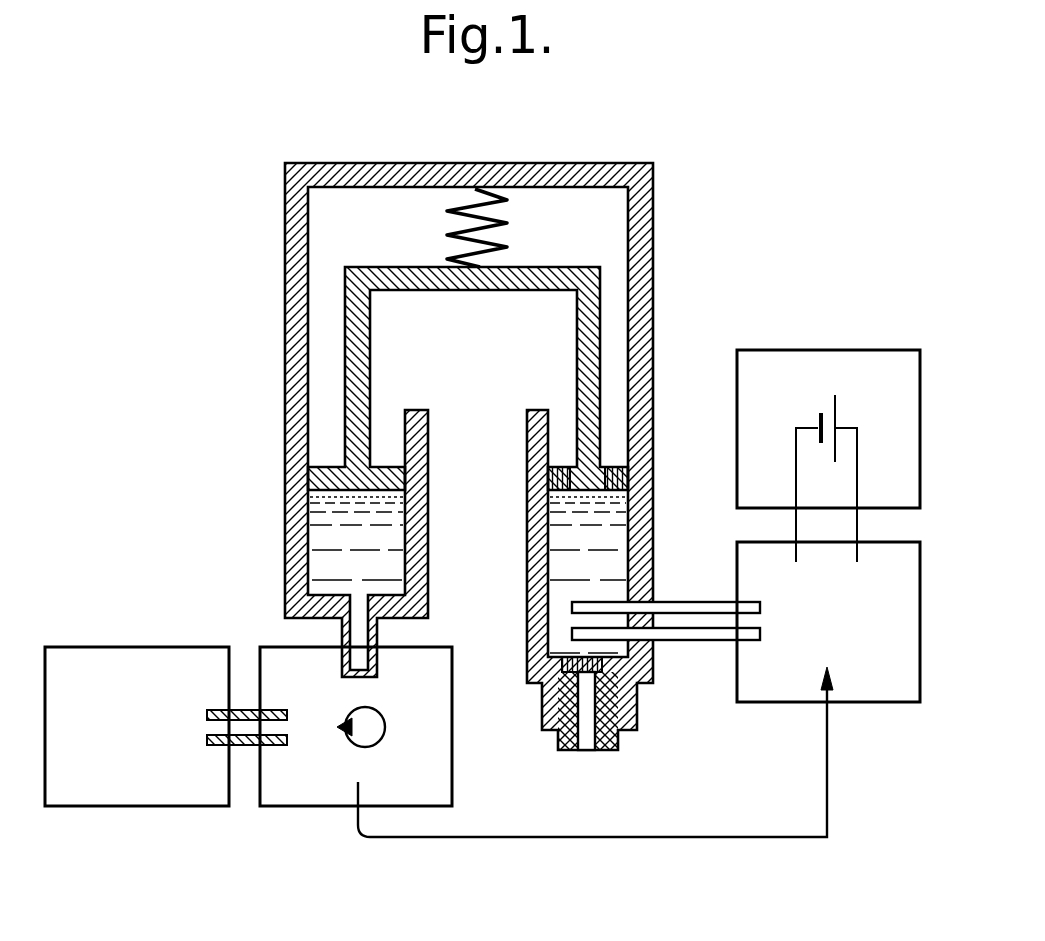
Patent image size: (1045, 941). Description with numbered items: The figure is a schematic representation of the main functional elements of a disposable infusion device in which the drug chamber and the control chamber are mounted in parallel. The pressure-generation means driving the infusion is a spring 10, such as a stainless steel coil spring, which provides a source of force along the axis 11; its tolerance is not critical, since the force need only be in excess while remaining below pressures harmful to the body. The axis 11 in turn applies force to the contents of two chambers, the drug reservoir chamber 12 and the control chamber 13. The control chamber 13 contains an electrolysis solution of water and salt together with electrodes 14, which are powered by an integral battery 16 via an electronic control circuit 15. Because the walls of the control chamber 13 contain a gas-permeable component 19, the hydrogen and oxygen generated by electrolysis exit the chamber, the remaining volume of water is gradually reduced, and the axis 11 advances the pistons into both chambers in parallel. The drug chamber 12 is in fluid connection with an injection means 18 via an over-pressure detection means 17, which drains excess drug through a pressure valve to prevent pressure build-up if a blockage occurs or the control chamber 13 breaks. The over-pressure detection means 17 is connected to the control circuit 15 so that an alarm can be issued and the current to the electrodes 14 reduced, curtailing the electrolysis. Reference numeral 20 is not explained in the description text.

The spring 10 is at (447, 217).
The axis 11 is at (355, 320).
The drug reservoir chamber 12 is at (323, 538).
The control chamber 13 is at (567, 568).
The electrodes 14 is at (700, 630).
The electronic control circuit 15 is at (893, 688).
The battery 16 is at (875, 365).
The over-pressure detection means 17 is at (316, 788).
The injection means 18 is at (135, 775).
The gas-permeable component 19 is at (557, 477).
The nozzle 20 is at (568, 748).